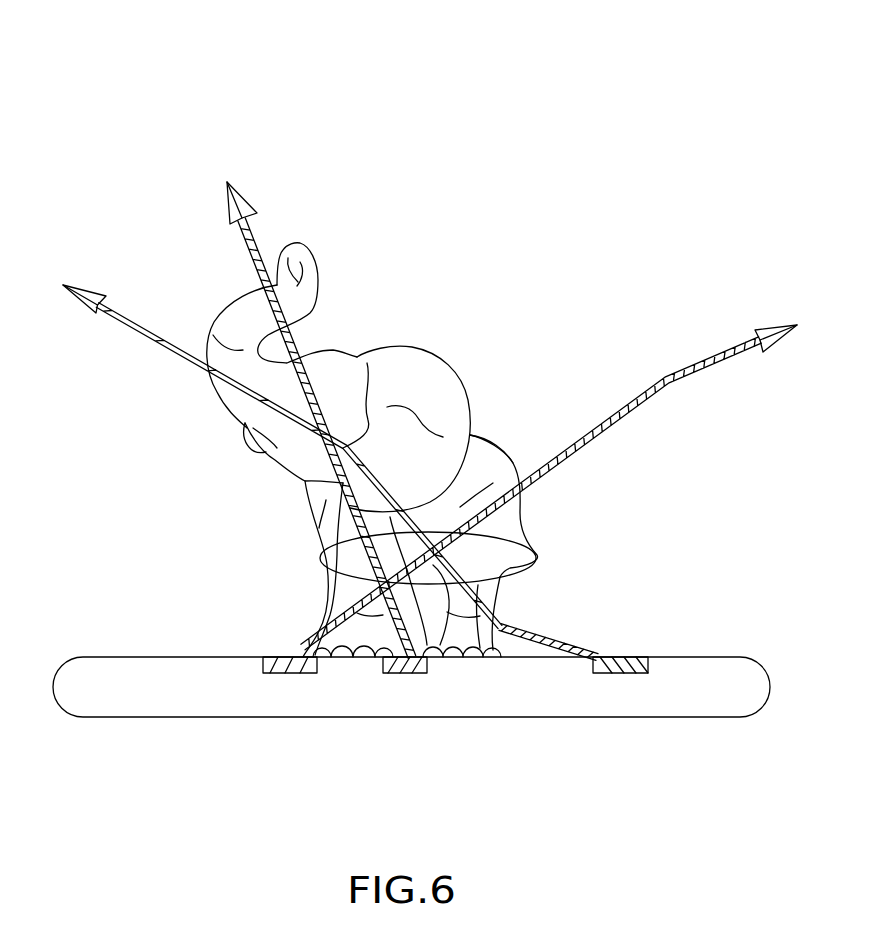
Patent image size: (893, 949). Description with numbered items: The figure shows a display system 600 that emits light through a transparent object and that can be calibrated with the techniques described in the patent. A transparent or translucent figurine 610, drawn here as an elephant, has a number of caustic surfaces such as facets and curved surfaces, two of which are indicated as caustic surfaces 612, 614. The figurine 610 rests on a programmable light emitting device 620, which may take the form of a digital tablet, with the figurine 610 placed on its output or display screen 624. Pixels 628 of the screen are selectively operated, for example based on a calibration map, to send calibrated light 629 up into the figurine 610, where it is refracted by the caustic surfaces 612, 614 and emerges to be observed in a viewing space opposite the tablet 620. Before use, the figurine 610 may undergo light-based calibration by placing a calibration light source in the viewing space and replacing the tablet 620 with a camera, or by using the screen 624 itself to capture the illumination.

The display system 600 is at (271, 119).
The transparent/translucent figurine 610 is at (288, 553).
The caustic surface 612 is at (502, 447).
The caustic surface 614 is at (260, 453).
The programmable light emitting device 620 is at (167, 765).
The output or display screen 624 is at (171, 657).
The pixels 628 is at (597, 668).
The calibrated light 629 is at (513, 570).